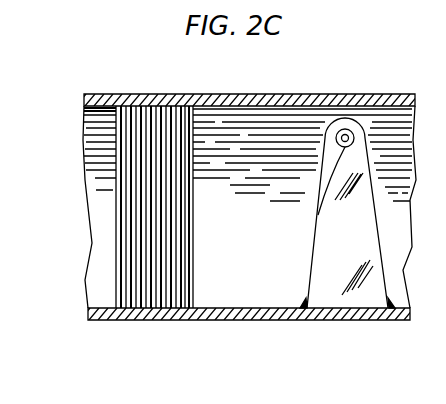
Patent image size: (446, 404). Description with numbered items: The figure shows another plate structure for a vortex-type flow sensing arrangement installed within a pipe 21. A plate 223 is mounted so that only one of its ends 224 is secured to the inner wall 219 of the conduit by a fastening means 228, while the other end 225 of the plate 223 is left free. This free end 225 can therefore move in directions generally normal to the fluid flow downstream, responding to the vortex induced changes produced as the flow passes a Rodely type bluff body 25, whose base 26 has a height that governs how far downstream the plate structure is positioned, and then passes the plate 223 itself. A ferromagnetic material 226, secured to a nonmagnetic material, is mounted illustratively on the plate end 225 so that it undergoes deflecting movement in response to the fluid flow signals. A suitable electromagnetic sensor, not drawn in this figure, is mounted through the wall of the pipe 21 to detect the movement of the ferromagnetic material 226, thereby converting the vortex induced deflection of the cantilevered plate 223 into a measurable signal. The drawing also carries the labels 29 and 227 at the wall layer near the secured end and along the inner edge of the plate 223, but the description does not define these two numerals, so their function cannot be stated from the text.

The pipe 21 is at (175, 95).
The inner wall 219 is at (222, 303).
The bluff body 25 is at (182, 246).
The base 26 is at (113, 203).
The bonding layer 29 is at (102, 112).
The plate 223 is at (327, 243).
The secured end of plate 224 is at (335, 295).
The free end of plate 225 is at (355, 120).
The ferromagnetic material 226 is at (344, 128).
The arm inner edge 227 is at (319, 203).
The fastening means 228 is at (304, 304).